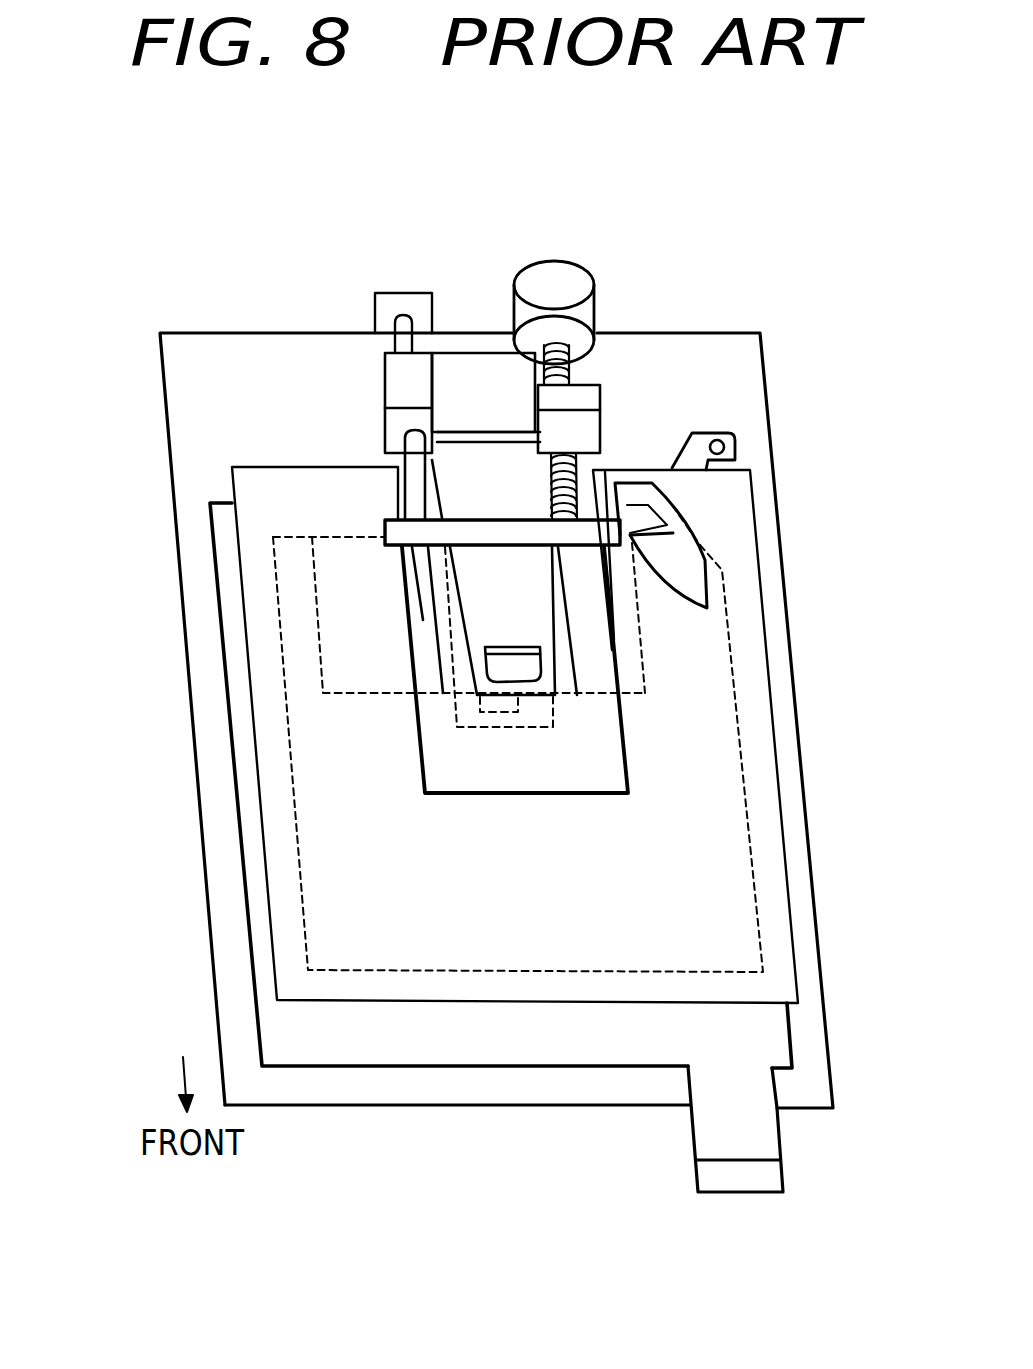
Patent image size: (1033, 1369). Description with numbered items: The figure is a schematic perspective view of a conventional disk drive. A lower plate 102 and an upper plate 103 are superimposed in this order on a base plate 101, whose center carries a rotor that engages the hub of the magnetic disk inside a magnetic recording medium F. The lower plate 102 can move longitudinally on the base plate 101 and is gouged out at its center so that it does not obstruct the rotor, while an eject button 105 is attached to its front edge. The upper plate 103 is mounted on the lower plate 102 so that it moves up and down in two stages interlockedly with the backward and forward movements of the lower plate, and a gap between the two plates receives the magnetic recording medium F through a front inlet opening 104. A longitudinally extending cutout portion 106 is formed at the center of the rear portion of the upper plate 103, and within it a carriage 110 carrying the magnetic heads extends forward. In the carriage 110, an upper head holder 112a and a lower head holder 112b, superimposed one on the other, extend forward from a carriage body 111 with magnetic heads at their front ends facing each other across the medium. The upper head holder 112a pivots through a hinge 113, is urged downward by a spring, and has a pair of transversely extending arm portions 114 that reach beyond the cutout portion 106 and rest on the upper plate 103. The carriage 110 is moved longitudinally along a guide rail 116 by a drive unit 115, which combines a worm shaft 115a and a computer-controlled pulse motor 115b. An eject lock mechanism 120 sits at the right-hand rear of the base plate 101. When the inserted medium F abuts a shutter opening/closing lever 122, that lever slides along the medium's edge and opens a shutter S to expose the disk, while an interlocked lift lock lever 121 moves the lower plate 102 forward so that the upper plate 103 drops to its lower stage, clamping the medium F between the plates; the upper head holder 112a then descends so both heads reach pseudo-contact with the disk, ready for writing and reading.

The base plate 101 is at (172, 483).
The lower plate 102 is at (240, 857).
The upper plate 103 is at (272, 912).
The front inlet opening 104 is at (397, 1107).
The eject button 105 is at (702, 1177).
The cutout portion 106 is at (528, 797).
The carriage 110 is at (467, 350).
The carriage body 111 is at (497, 375).
The upper head holder 112a is at (482, 623).
The lower head holder 112b is at (455, 713).
The hinge 113 is at (385, 385).
The arm portions 114 is at (587, 547).
The drive unit 115 is at (556, 261).
The worm shaft 115a is at (570, 373).
The pulse motor 115b is at (573, 293).
The guide rail 116 is at (392, 325).
The eject lock mechanism 120 is at (720, 425).
The lift lock lever 121 is at (672, 497).
The shutter opening/closing lever 122 is at (640, 515).
The shutter S is at (595, 643).
The magnetic recording medium F is at (757, 915).